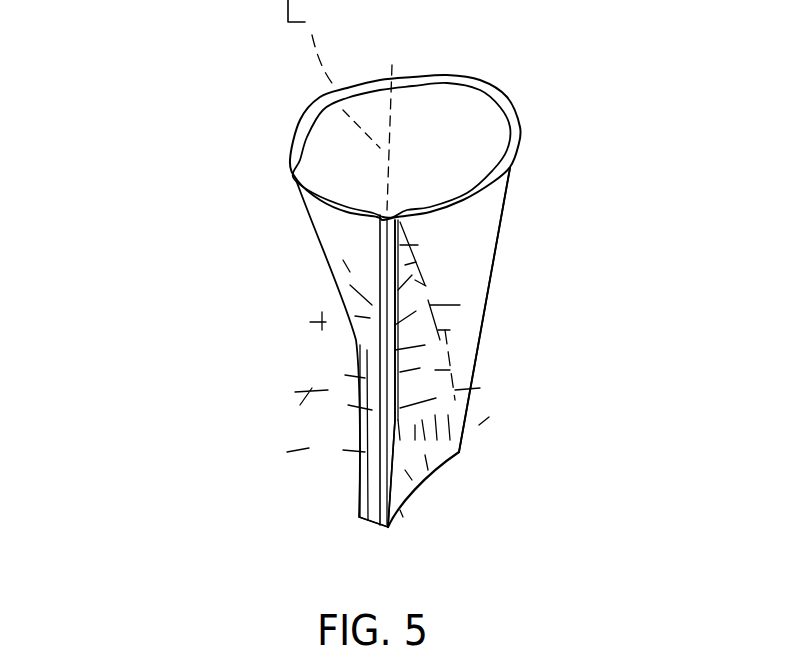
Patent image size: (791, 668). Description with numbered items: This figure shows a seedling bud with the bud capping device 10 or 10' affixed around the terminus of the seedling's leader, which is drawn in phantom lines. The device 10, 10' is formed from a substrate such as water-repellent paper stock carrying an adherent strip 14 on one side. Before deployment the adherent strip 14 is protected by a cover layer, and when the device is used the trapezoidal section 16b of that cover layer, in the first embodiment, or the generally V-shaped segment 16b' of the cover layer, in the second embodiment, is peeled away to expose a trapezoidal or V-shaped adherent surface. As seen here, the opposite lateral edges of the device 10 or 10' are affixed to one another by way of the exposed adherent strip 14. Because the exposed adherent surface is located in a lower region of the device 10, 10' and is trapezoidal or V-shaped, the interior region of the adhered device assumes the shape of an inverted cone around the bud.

The bud-capping device 10 is at (462, 263).
The bud-capping device 10' is at (570, 238).
The trapezoidal section 16b is at (505, 371).
The V-shaped segment 16b' is at (544, 373).
The adherent strip 14 is at (365, 528).